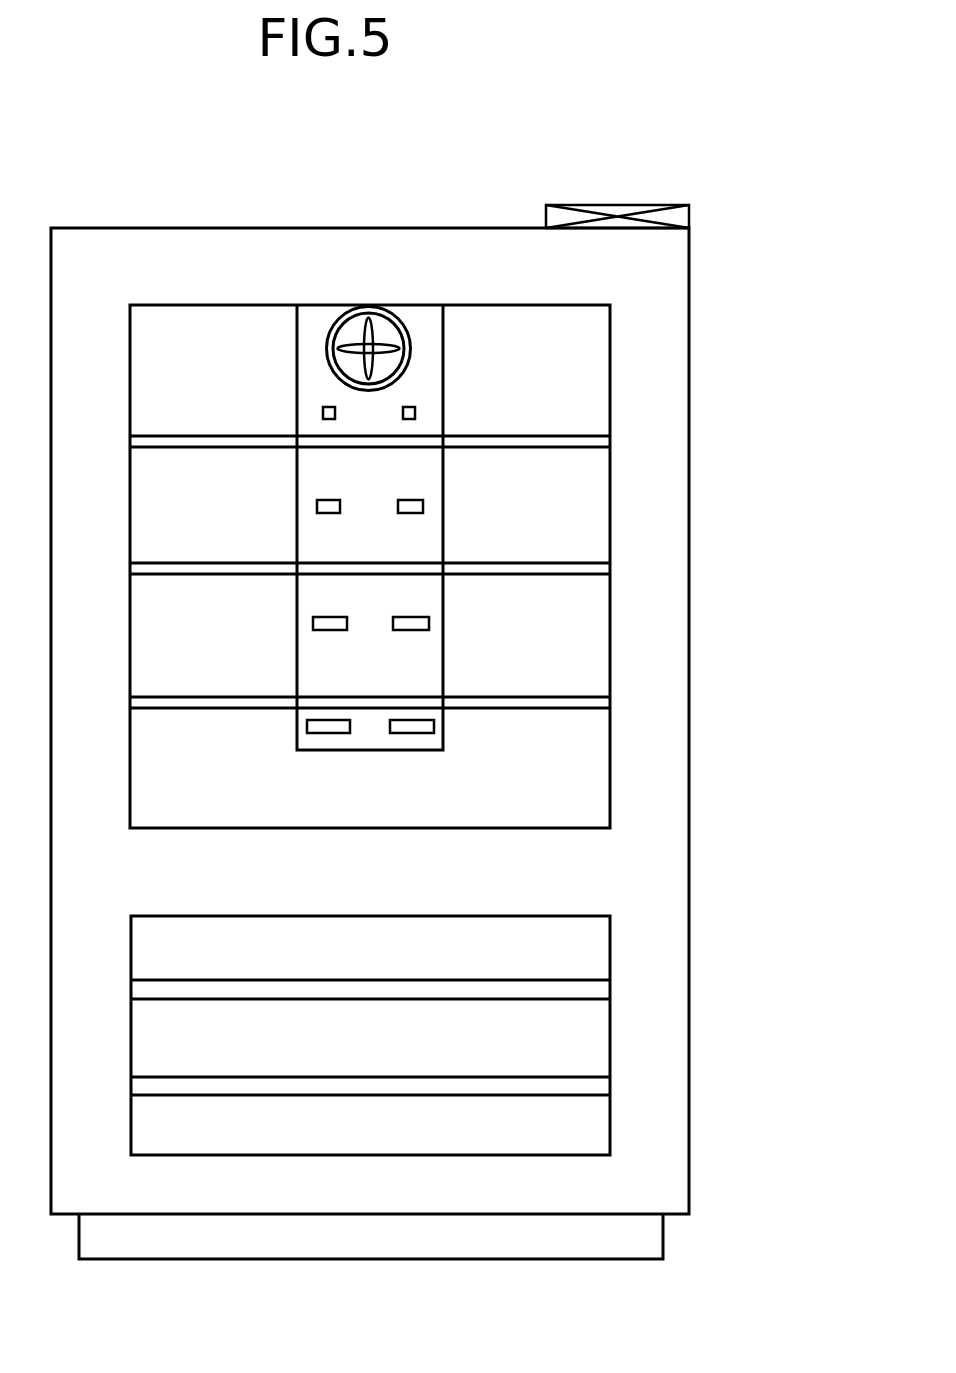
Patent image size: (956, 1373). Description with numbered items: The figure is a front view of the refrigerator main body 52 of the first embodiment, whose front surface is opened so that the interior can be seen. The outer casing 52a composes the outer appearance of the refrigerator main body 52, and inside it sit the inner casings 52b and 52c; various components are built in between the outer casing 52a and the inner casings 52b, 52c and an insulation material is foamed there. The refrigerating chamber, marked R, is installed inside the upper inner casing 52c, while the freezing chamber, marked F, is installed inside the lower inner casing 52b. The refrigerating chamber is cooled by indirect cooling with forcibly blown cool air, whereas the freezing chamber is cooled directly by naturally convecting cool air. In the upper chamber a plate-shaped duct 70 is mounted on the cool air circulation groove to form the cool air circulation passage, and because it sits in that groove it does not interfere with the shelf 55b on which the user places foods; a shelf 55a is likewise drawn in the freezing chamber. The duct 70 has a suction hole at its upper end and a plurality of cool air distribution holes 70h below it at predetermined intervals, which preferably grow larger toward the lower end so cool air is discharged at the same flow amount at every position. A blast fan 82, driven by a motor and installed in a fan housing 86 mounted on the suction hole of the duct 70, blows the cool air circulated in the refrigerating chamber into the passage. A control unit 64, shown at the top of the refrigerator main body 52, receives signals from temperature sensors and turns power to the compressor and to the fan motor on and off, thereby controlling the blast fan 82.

The refrigerator main body 52 is at (224, 214).
The outer casing 52a is at (690, 770).
The inner casing 52b is at (597, 948).
The inner casing 52c is at (590, 653).
The shelf 55a is at (597, 992).
The shelf 55b is at (605, 570).
The control unit 64 is at (616, 205).
The duct 70 is at (430, 345).
The cool air distribution holes 70h is at (415, 413).
The blast fan 82 is at (367, 308).
The fan housing 86 is at (380, 306).